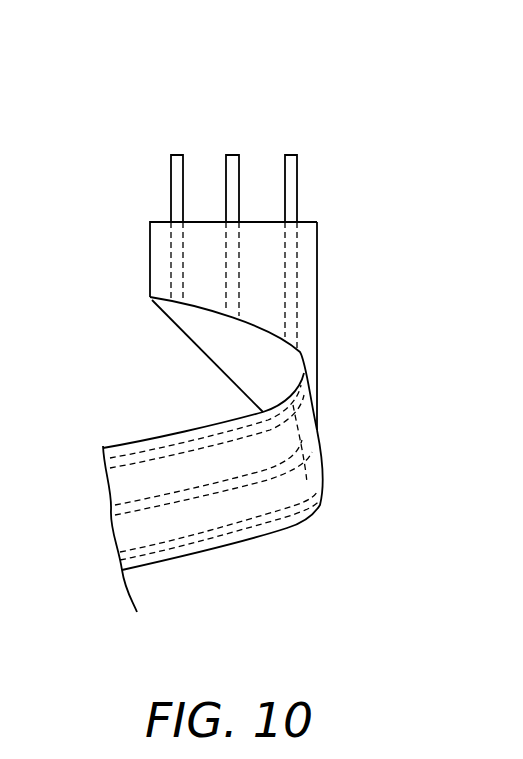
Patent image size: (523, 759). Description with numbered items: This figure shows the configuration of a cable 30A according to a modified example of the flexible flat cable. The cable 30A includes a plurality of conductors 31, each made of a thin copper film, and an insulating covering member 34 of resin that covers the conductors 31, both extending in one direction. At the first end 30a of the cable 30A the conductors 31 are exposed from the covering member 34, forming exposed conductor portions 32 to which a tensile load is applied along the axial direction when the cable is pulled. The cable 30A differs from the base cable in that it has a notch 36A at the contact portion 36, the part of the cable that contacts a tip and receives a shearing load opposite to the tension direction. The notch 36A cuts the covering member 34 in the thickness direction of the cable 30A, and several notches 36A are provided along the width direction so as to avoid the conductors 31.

The cable 30A is at (256, 349).
The first end 30a is at (124, 206).
The conductors 31 is at (150, 452).
The exposed conductor portions 32 is at (293, 167).
The covering member 34 is at (211, 311).
The contact portion 36 is at (292, 492).
The notch 36A is at (308, 477).